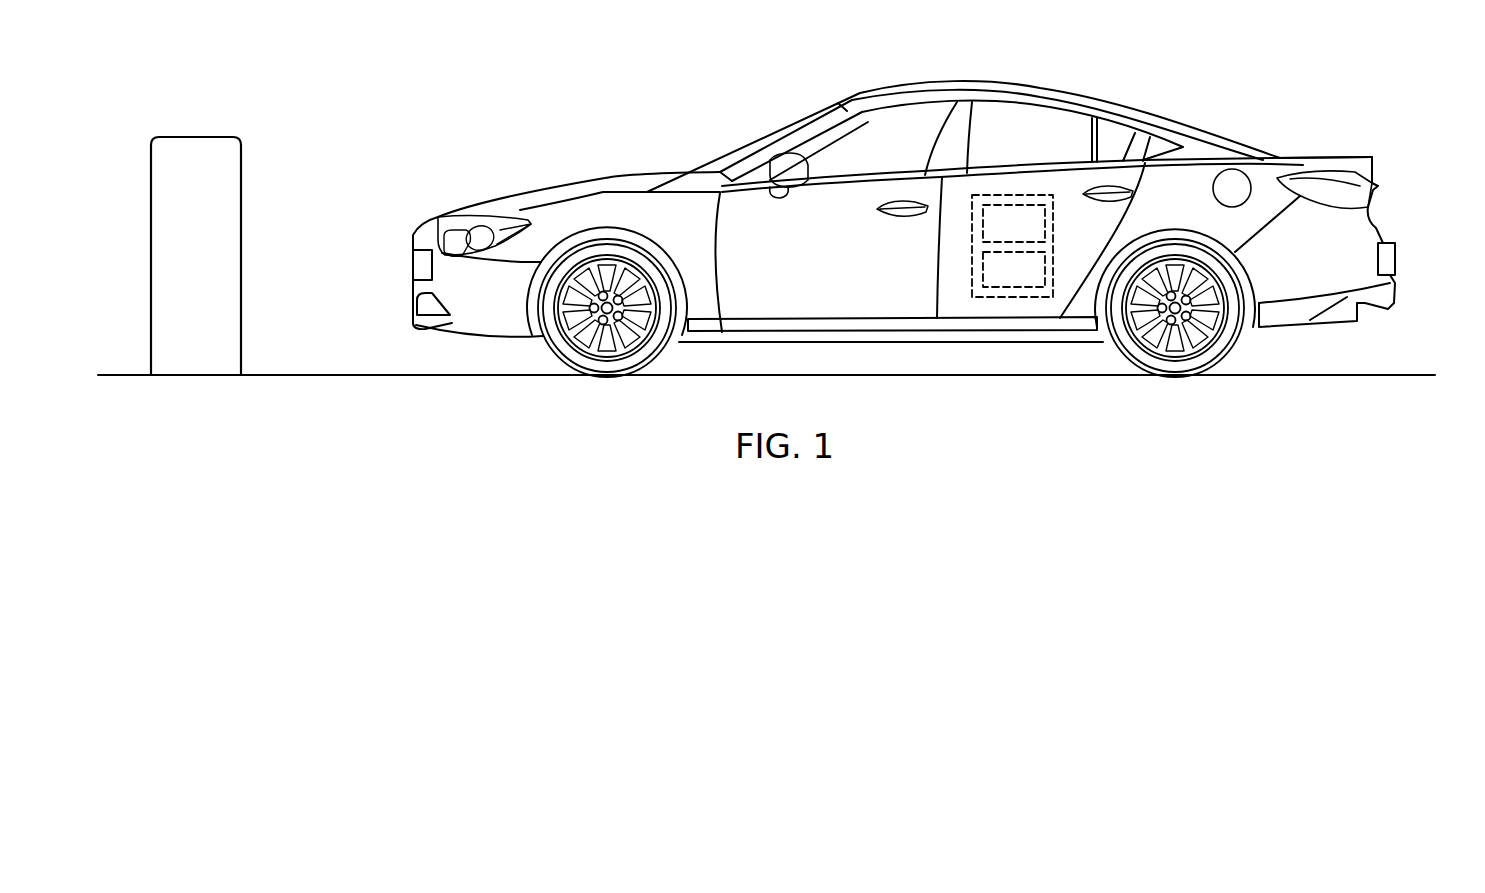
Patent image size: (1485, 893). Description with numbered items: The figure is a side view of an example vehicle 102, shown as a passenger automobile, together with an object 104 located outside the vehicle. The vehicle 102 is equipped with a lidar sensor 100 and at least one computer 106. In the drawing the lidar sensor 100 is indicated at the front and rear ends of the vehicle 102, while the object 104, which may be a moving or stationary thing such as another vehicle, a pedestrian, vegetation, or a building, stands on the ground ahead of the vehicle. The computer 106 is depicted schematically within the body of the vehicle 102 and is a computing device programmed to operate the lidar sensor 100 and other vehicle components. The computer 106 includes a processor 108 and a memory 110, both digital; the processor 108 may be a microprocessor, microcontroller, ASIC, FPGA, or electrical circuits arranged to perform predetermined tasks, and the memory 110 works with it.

The lidar sensor 100 is at (413, 266).
The vehicle 102 is at (965, 83).
The object 104 is at (197, 136).
The computer 106 is at (972, 262).
The processor 108 is at (1036, 235).
The memory 110 is at (1036, 281).